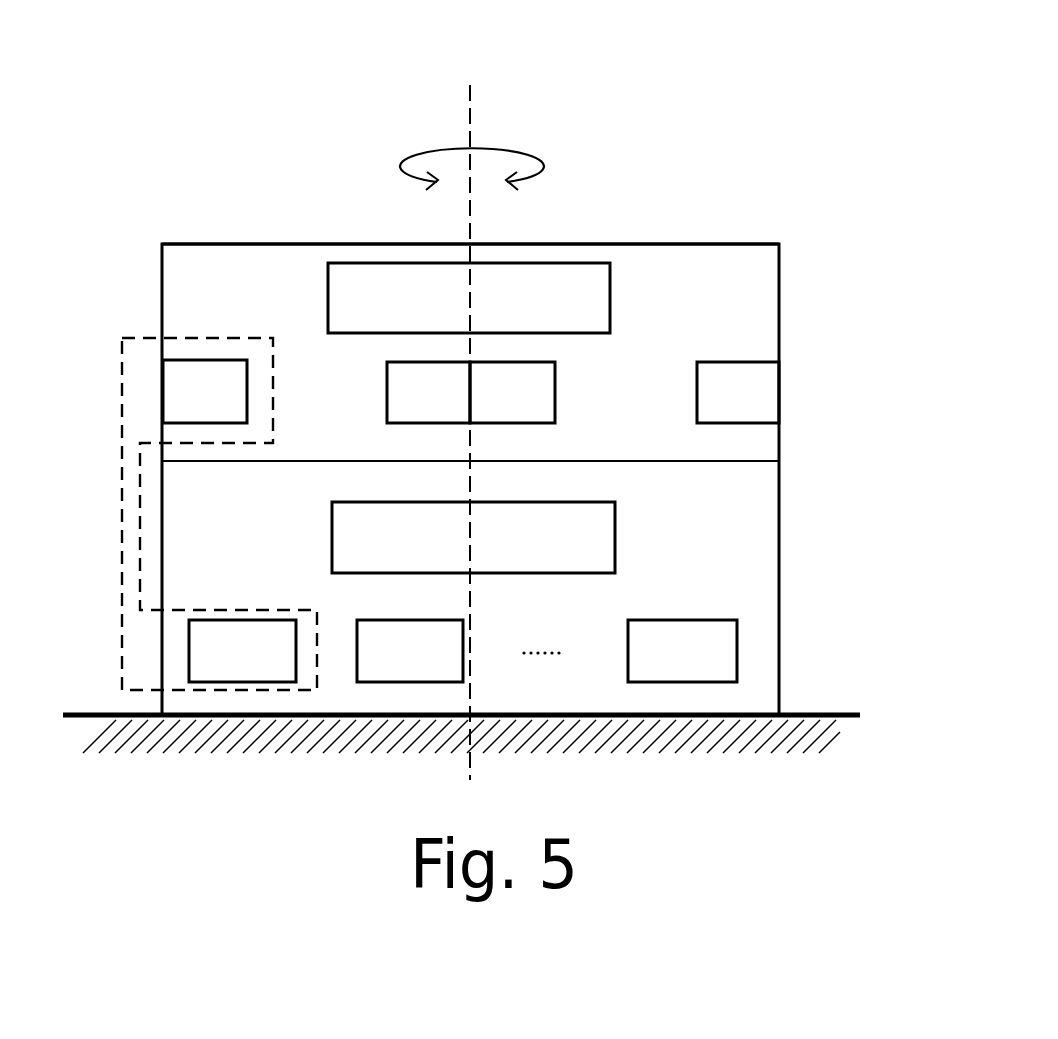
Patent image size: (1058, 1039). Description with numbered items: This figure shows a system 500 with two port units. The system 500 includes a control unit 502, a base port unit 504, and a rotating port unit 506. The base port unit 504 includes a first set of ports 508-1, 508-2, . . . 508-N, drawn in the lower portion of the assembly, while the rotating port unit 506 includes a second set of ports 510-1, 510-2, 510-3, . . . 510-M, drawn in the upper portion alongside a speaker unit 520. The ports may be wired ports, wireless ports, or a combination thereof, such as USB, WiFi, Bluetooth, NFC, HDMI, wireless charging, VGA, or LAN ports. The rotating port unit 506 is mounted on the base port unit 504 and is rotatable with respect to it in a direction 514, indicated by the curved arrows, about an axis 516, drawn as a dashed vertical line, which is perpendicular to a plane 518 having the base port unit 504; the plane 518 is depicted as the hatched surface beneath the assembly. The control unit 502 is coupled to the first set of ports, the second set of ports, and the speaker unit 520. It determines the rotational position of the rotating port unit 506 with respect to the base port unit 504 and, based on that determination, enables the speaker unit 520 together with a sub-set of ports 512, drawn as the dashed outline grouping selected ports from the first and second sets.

The system 500 is at (641, 87).
The control unit 502 is at (473, 537).
The base port unit 504 is at (780, 560).
The rotating port unit 506 is at (649, 243).
The first port of first set of ports 508-1 is at (242, 651).
The second port of first set of ports 508-2 is at (410, 651).
The Nth port of first set of ports 508-N is at (682, 651).
The first port of second set of ports 510-1 is at (205, 391).
The second port of second set of ports 510-2 is at (428, 392).
The third port of second set of ports 510-3 is at (512, 392).
The Mth port of second set of ports 510-M is at (738, 392).
The sub-set of ports 512 is at (145, 337).
The direction 514 is at (531, 180).
The axis 516 is at (469, 161).
The plane 518 is at (803, 715).
The speaker unit 520 is at (469, 298).